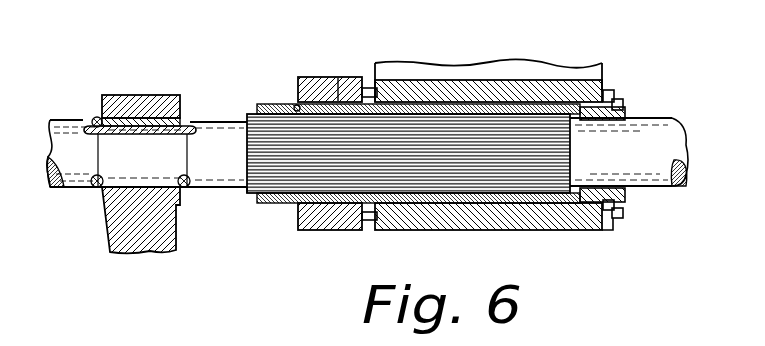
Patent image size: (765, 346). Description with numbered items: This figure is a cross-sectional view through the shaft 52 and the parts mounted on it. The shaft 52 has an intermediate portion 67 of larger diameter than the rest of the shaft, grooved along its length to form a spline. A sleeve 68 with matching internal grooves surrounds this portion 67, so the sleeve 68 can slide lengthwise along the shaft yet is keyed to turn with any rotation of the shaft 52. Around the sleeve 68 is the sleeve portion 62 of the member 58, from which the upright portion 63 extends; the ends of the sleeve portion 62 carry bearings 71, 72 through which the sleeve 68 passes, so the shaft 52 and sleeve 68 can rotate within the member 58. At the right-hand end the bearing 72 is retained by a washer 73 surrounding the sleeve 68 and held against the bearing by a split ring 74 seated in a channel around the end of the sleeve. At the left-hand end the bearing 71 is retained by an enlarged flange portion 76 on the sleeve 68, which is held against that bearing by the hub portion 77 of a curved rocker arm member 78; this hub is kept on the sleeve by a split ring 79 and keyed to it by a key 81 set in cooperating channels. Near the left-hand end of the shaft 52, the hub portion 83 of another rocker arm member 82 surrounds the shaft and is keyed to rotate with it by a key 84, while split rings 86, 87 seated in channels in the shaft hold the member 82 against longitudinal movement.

The shaft 52 is at (640, 166).
The member 58 is at (448, 63).
The sleeve portion 62 is at (589, 232).
The upright portion 63 is at (512, 63).
The intermediate portion 67 is at (247, 197).
The sleeve 68 is at (275, 205).
The bearing 71 is at (373, 90).
The bearing 72 is at (607, 92).
The washer 73 is at (615, 98).
The split ring 74 is at (624, 101).
The enlarged flange portion 76 is at (369, 222).
The hub portion 77 is at (329, 232).
The curved rocker arm member 78 is at (317, 68).
The split ring 79 is at (296, 105).
The key 81 is at (338, 80).
The rocker arm member 82 is at (189, 243).
The hub portion 83 is at (135, 100).
The key 84 is at (174, 121).
The split ring 86 is at (94, 118).
The split ring 87 is at (190, 126).